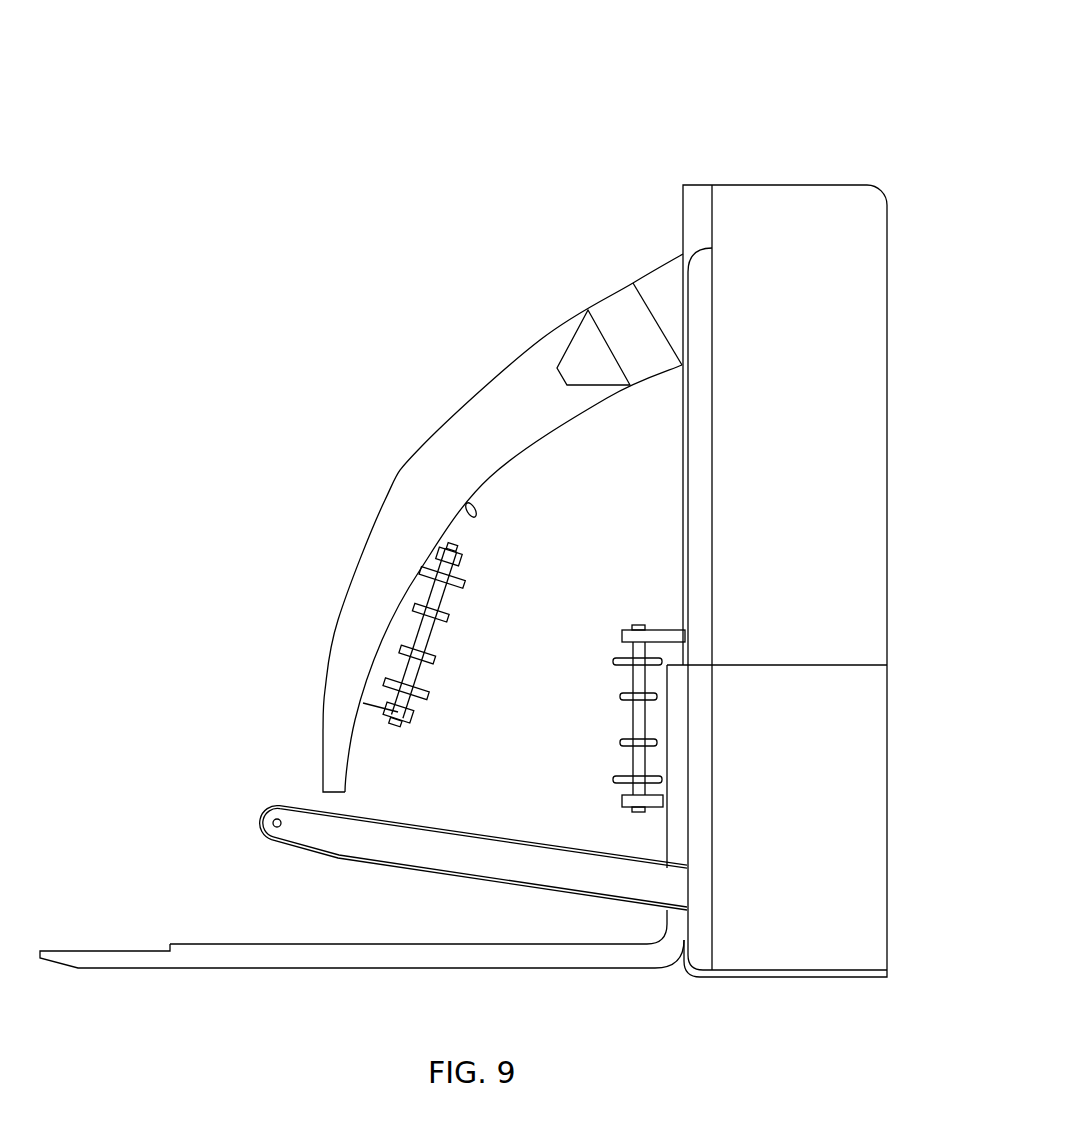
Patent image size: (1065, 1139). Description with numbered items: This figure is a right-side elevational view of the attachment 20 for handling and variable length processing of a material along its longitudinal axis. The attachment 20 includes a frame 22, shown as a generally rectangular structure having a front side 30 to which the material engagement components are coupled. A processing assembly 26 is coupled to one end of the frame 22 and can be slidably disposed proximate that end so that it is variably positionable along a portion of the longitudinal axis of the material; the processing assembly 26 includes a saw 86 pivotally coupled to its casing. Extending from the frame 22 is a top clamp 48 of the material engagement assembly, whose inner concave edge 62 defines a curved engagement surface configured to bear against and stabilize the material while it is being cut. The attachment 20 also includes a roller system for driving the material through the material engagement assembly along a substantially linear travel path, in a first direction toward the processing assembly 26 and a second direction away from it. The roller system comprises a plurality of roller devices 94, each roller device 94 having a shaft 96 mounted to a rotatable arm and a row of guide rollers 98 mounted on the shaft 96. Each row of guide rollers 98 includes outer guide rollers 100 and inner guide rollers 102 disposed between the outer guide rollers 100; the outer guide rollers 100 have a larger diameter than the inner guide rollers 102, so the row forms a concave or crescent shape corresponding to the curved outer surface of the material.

The attachment 20 is at (256, 96).
The frame 22 is at (823, 237).
The processing assembly 26 is at (818, 700).
The front side 30 is at (678, 455).
The top clamp 48 is at (407, 500).
The inner concave edge 62 is at (466, 512).
The saw 86 is at (340, 837).
The roller device 94 is at (460, 557).
The shaft 96 is at (424, 638).
The row of guide rollers 98 is at (420, 694).
The outer guide rollers 100 is at (428, 572).
The inner guide rollers 102 is at (415, 610).